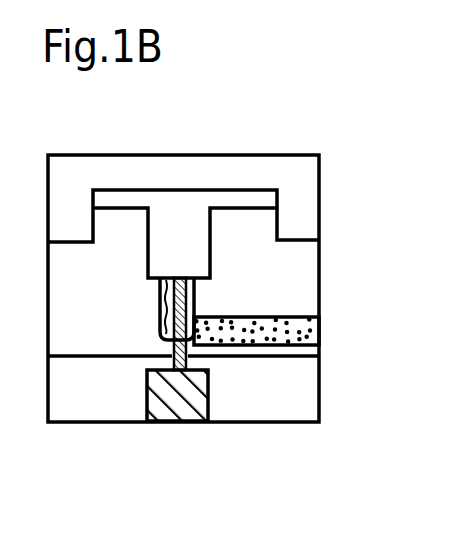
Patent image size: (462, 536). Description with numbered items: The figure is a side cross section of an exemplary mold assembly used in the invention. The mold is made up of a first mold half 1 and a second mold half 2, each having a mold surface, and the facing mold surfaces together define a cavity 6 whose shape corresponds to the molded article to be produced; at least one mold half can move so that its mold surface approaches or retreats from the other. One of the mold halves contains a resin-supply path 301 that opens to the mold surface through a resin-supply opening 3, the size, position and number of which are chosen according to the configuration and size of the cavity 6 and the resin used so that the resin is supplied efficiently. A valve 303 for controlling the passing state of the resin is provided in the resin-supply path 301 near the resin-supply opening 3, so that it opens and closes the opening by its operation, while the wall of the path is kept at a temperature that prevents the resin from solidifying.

The first mold half 1 is at (152, 170).
The second mold half 2 is at (277, 283).
The resin-supply opening 3 is at (177, 267).
The cavity 6 is at (172, 232).
The resin-supply path 301 is at (277, 332).
The valve 303 is at (200, 404).